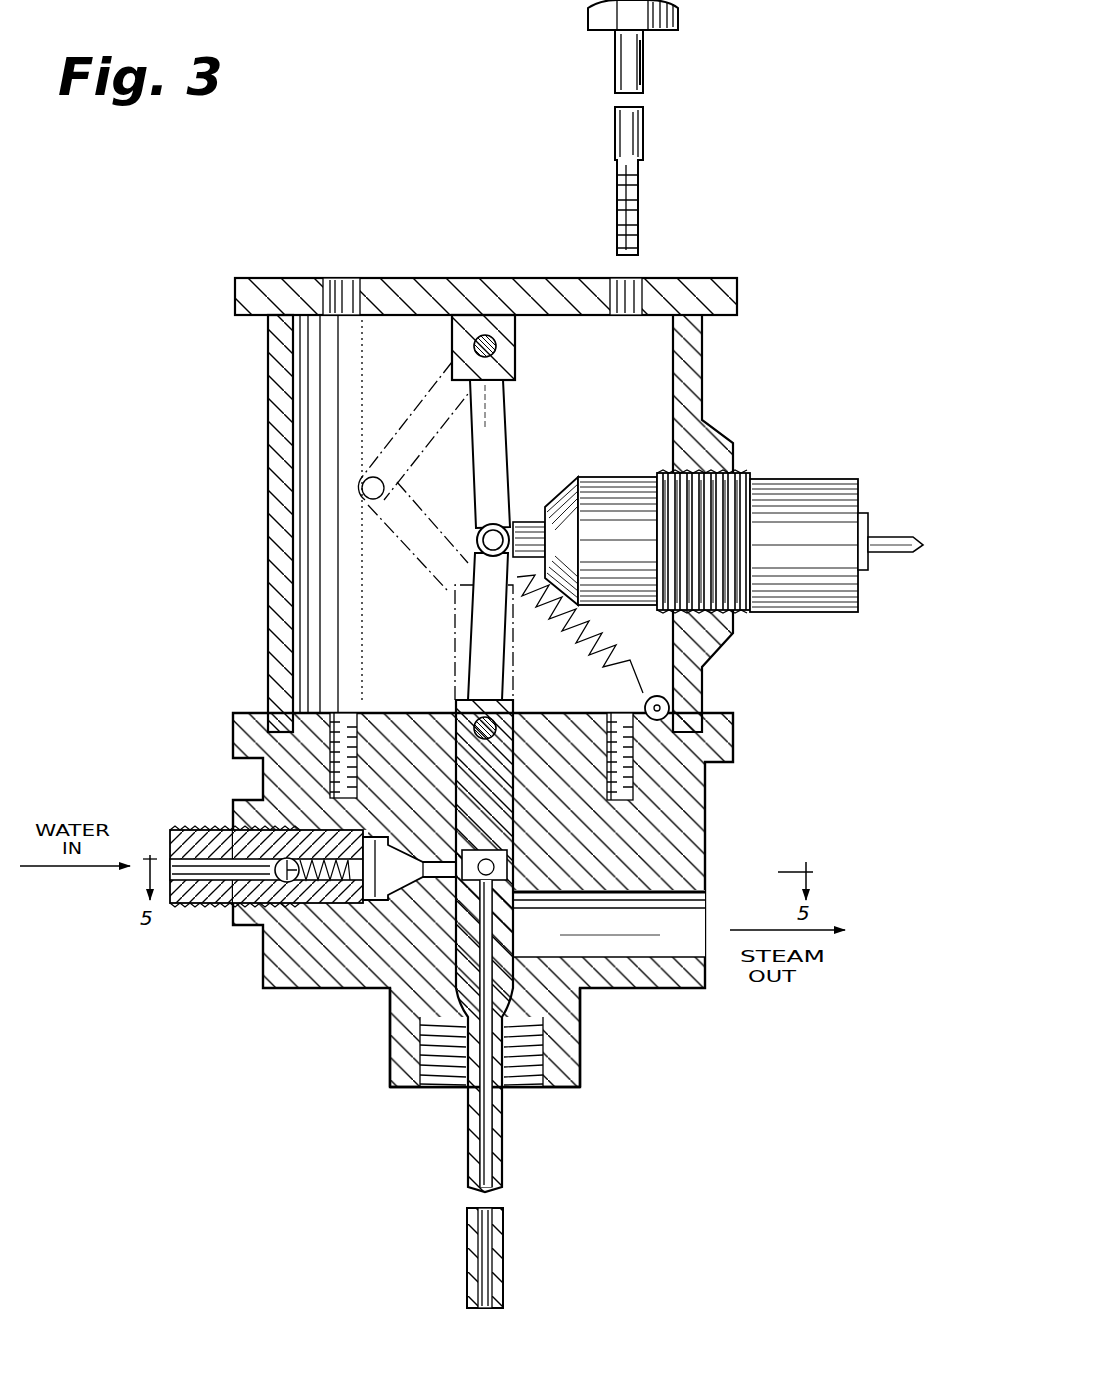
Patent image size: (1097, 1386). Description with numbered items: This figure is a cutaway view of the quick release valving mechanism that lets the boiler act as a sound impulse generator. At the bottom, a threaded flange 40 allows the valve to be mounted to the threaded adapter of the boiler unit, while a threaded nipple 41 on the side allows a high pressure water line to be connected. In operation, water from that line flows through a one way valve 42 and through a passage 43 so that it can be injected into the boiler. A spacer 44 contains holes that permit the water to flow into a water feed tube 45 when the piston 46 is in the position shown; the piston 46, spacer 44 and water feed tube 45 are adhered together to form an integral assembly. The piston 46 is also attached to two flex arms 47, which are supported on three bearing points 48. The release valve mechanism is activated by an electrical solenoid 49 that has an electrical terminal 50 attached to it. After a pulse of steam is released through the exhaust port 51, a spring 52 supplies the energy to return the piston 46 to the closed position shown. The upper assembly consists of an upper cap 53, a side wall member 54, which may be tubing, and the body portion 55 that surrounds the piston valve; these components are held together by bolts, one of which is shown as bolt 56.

The threaded flange 40 is at (567, 1062).
The threaded nipple 41 is at (190, 905).
The one way valve 42 is at (280, 866).
The passage 43 is at (478, 873).
The spacer 44 is at (490, 878).
The water feed tube 45 is at (503, 1170).
The piston 46 is at (515, 712).
The flex arms 47 is at (506, 425).
The bearing points 48 is at (472, 352).
The electrical solenoid 49 is at (796, 605).
The electrical terminal 50 is at (905, 555).
The exhaust port 51 is at (706, 897).
The spring 52 is at (630, 662).
The upper cap 53 is at (456, 288).
The side wall member 54 is at (272, 380).
The body portion 55 is at (700, 826).
The bolt 56 is at (643, 80).